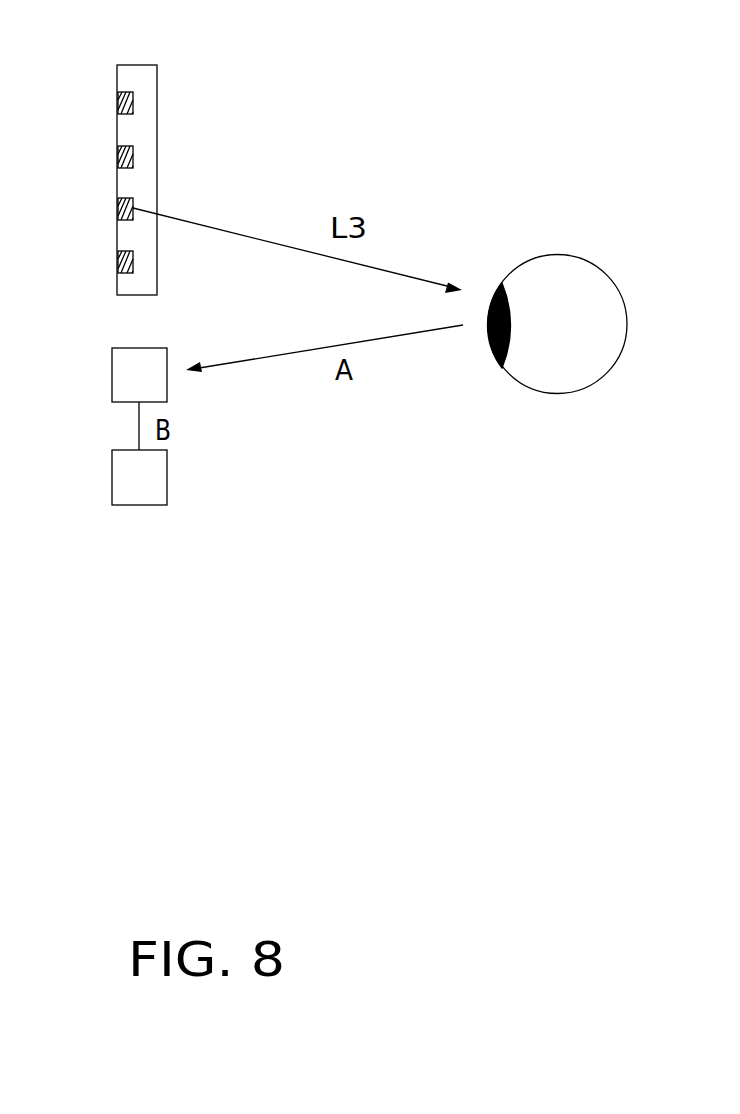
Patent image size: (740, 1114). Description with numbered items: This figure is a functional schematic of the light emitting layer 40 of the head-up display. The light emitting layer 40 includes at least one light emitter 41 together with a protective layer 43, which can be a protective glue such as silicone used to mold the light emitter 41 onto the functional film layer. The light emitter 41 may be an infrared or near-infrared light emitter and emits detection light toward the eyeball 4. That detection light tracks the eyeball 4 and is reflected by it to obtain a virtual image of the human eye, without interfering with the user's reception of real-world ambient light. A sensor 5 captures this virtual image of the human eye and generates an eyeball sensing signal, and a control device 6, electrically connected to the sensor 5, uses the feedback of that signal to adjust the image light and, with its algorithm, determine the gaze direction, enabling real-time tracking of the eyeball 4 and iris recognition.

The light emitting layer 40 is at (128, 75).
The light emitter 41 is at (118, 155).
The protective layer 43 is at (152, 132).
The eyeball 4 is at (577, 275).
The sensor 5 is at (123, 377).
The control device 6 is at (130, 477).